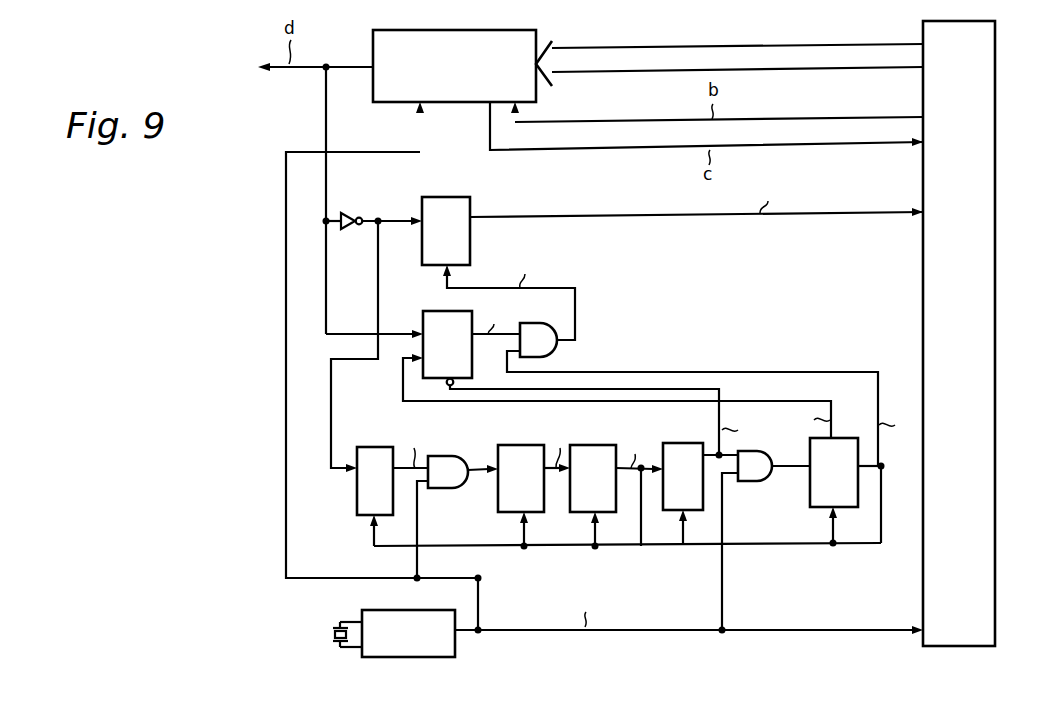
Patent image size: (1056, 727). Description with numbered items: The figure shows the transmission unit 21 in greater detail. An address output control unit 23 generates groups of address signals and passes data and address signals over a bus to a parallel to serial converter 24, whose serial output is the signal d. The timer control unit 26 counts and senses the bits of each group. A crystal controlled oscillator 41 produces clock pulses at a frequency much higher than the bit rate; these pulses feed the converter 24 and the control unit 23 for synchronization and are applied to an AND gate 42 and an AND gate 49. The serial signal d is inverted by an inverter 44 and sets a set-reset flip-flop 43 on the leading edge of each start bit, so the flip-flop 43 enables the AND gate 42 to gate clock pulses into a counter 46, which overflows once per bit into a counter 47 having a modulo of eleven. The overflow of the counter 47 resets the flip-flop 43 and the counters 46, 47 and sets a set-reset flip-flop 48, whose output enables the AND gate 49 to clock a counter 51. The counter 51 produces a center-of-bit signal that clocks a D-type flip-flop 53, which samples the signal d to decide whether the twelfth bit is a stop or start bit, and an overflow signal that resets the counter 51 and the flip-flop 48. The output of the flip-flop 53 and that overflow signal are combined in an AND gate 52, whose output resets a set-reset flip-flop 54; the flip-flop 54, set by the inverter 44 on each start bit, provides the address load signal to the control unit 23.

The transmission unit 21 is at (802, 36).
The address output control unit 23 is at (996, 64).
The parallel to serial converter 24 is at (496, 30).
The timer control unit 26 is at (260, 412).
The oscillator 41 is at (404, 658).
The AND gate 42 is at (456, 457).
The set-reset flip-flop 43 is at (376, 447).
The inverter 44 is at (349, 211).
The counter 46 is at (520, 445).
The counter 47 is at (605, 445).
The set-reset flip-flop 48 is at (686, 443).
The AND gate 49 is at (757, 482).
The counter 51 is at (845, 510).
The AND gate 52 is at (560, 353).
The D-type flip-flop 53 is at (426, 311).
The set-reset flip-flop 54 is at (462, 197).